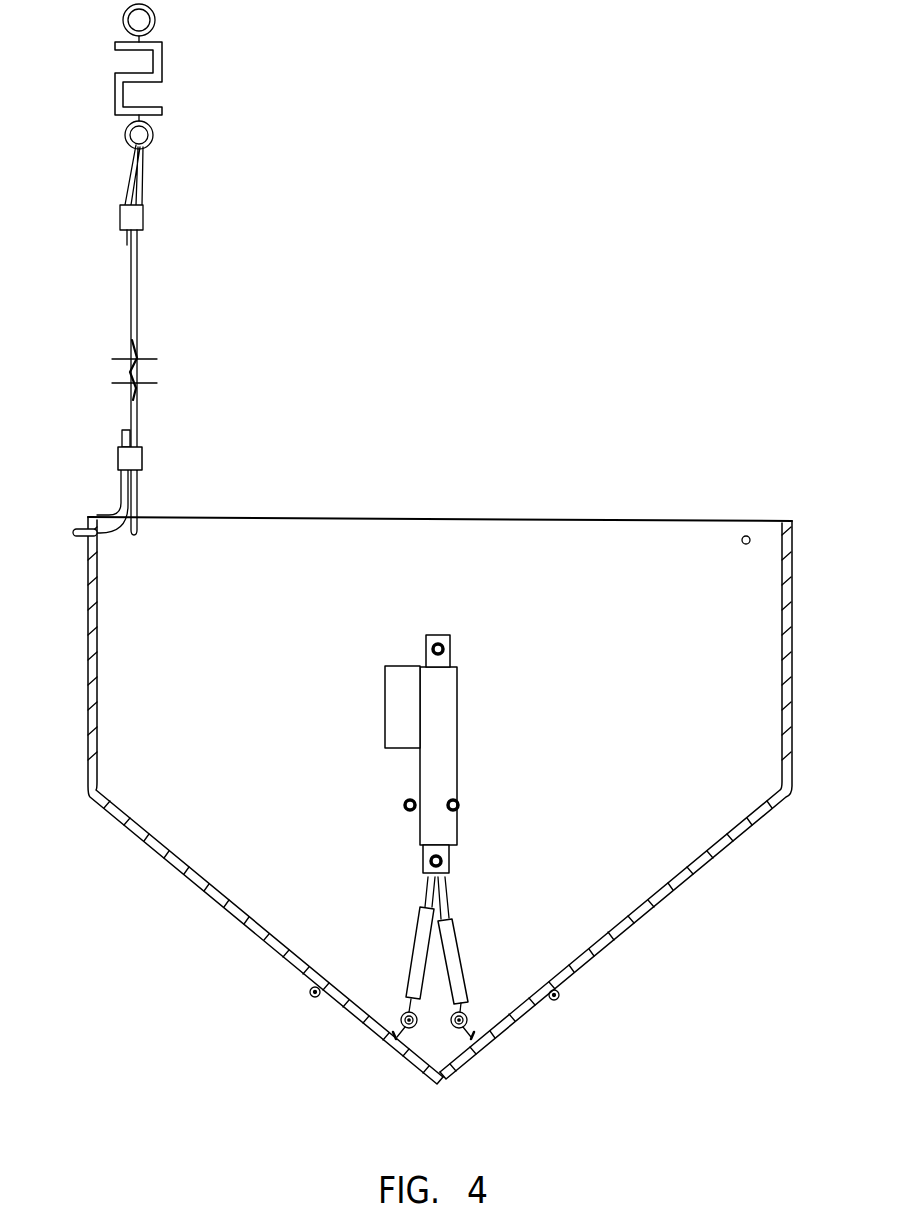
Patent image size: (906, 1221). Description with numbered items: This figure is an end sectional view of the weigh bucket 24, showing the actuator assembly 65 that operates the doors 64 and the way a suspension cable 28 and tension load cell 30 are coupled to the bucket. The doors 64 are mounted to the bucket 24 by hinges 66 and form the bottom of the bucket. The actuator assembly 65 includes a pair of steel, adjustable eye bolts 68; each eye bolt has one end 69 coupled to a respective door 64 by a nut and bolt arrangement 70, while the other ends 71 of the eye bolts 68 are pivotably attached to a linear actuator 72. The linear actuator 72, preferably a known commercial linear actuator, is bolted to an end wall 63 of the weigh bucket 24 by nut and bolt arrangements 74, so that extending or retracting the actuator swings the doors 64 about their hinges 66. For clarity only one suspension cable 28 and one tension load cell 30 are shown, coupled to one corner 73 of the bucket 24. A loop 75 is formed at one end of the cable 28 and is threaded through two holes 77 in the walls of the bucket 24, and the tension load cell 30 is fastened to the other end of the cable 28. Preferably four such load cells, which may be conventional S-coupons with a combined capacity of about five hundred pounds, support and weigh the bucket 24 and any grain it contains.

The weigh bucket 24 is at (423, 472).
The suspension cable 28 is at (142, 187).
The tension load cell 30 is at (162, 62).
The end wall 63 is at (663, 533).
The doors 64 is at (392, 1034).
The actuator assembly 65 is at (498, 741).
The hinges 66 is at (309, 994).
The adjustable eye bolts 68 is at (418, 938).
The one end 69 is at (418, 1028).
The nut and bolt arrangement 70 is at (384, 1008).
The other ends 71 is at (444, 861).
The linear actuator 72 is at (427, 718).
The corner 73 is at (105, 512).
The nut and bolt arrangements 74 is at (440, 645).
The loop 75 is at (122, 503).
The holes 77 is at (137, 533).